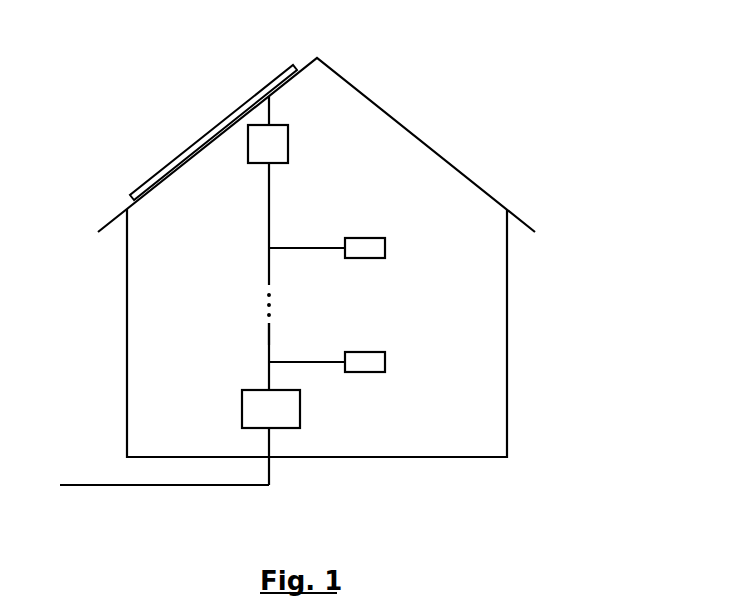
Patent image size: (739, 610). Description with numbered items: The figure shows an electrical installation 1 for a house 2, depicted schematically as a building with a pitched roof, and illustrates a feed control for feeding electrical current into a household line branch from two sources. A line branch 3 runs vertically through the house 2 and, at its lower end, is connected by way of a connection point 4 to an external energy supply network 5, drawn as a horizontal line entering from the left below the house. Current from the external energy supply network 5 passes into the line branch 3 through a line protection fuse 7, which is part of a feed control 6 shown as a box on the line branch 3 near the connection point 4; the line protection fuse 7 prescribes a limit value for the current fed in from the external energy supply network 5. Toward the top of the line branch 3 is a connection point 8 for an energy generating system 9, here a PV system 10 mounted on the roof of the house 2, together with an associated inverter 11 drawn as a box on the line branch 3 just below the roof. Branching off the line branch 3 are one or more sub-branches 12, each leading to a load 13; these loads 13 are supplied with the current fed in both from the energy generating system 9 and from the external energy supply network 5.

The electrical installation 1 is at (256, 273).
The house 2 is at (362, 233).
The line branch 3 is at (269, 337).
The connection point 4 is at (269, 457).
The external energy supply network 5 is at (122, 486).
The feed control 6 is at (308, 409).
The line protection fuse 7 is at (300, 409).
The connection point 8 is at (271, 210).
The energy generating system 9 is at (252, 65).
The PV system 10 is at (207, 143).
The inverter 11 is at (288, 143).
The sub-branch 12 is at (310, 249).
The load 13 is at (370, 238).